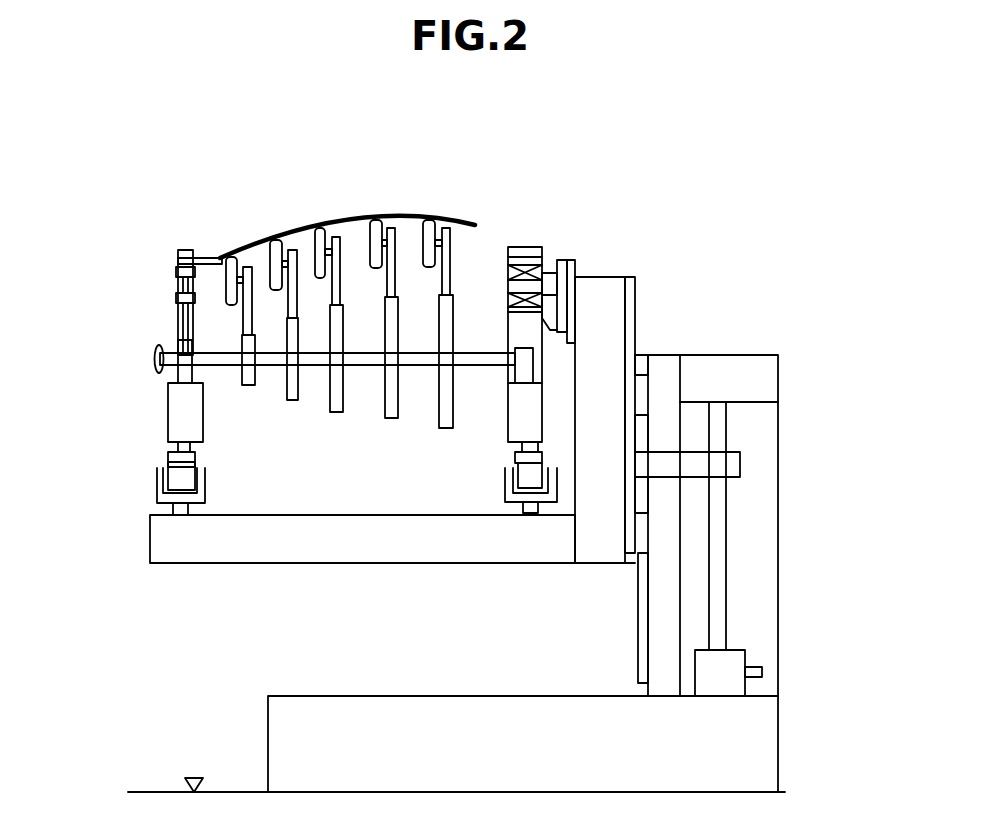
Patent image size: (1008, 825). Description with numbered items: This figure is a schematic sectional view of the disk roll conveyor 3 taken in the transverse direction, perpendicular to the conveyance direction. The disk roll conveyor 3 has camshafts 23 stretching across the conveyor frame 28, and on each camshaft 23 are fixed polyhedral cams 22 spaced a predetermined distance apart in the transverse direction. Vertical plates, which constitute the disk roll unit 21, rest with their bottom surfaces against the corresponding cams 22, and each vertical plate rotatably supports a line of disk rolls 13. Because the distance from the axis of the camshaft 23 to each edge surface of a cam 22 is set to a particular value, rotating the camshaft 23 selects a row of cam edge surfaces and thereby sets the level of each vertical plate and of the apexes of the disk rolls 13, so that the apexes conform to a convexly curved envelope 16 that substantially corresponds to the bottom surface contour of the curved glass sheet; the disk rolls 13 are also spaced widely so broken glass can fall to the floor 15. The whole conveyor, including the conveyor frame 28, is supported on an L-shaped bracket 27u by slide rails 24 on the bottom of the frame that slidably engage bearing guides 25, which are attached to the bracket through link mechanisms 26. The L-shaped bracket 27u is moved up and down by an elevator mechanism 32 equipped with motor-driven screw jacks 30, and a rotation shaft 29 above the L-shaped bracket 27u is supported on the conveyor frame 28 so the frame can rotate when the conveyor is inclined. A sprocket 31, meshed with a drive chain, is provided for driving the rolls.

The disk roll conveyor 3 is at (378, 214).
The disk rolls 13 is at (430, 225).
The floor 15 is at (153, 790).
The curved forming plate 16 is at (300, 234).
The disk roll unit 21 is at (450, 264).
The cams 22 is at (432, 410).
The camshafts 23 is at (220, 352).
The slide rails 24 is at (178, 452).
The bearing guides 25 is at (165, 470).
The link mechanisms 26 is at (153, 499).
The L-shaped bracket 27u is at (462, 556).
The conveyor frame 28 is at (175, 402).
The rotation shaft 29 is at (545, 270).
The screw jacks 30 is at (738, 454).
The sprocket 31 is at (183, 250).
The elevator mechanism 32 is at (735, 350).